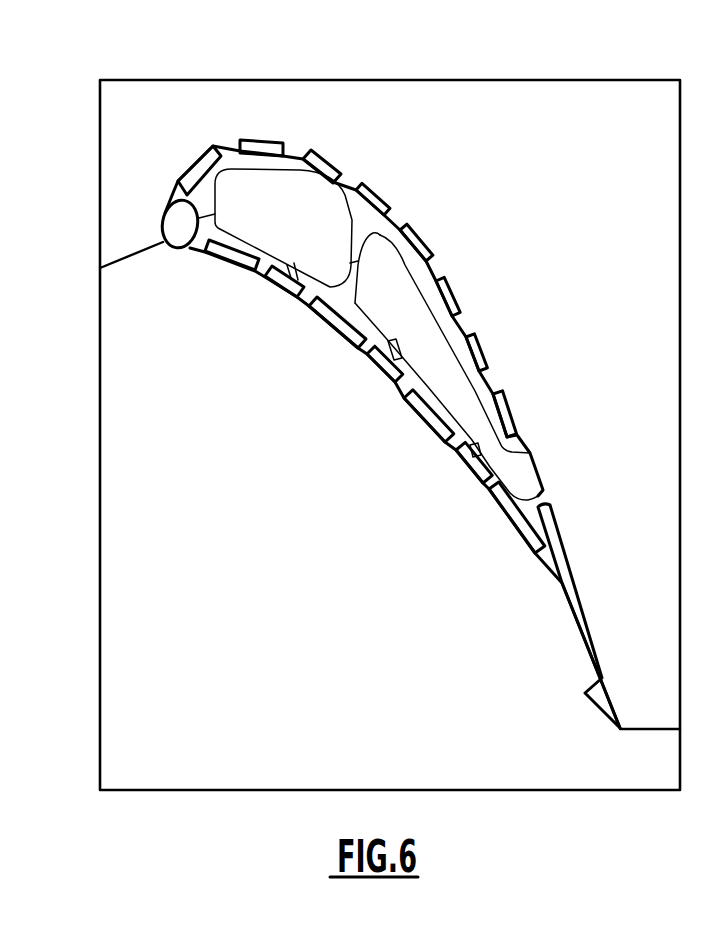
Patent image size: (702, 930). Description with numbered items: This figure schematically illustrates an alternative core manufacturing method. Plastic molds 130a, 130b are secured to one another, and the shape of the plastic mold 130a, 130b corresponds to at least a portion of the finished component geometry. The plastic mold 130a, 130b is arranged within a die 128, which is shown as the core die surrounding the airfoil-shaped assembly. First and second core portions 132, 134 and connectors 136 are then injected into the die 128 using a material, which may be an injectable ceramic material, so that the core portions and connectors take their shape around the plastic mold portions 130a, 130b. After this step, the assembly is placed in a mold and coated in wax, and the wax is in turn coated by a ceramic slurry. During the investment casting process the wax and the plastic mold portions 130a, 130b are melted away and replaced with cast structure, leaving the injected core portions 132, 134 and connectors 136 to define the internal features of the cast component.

The die 128 is at (471, 96).
The plastic mold 130a is at (340, 305).
The plastic mold 130b is at (478, 391).
The first core portion 132 is at (265, 225).
The second core portion 134 is at (329, 328).
The connectors 136 is at (292, 273).